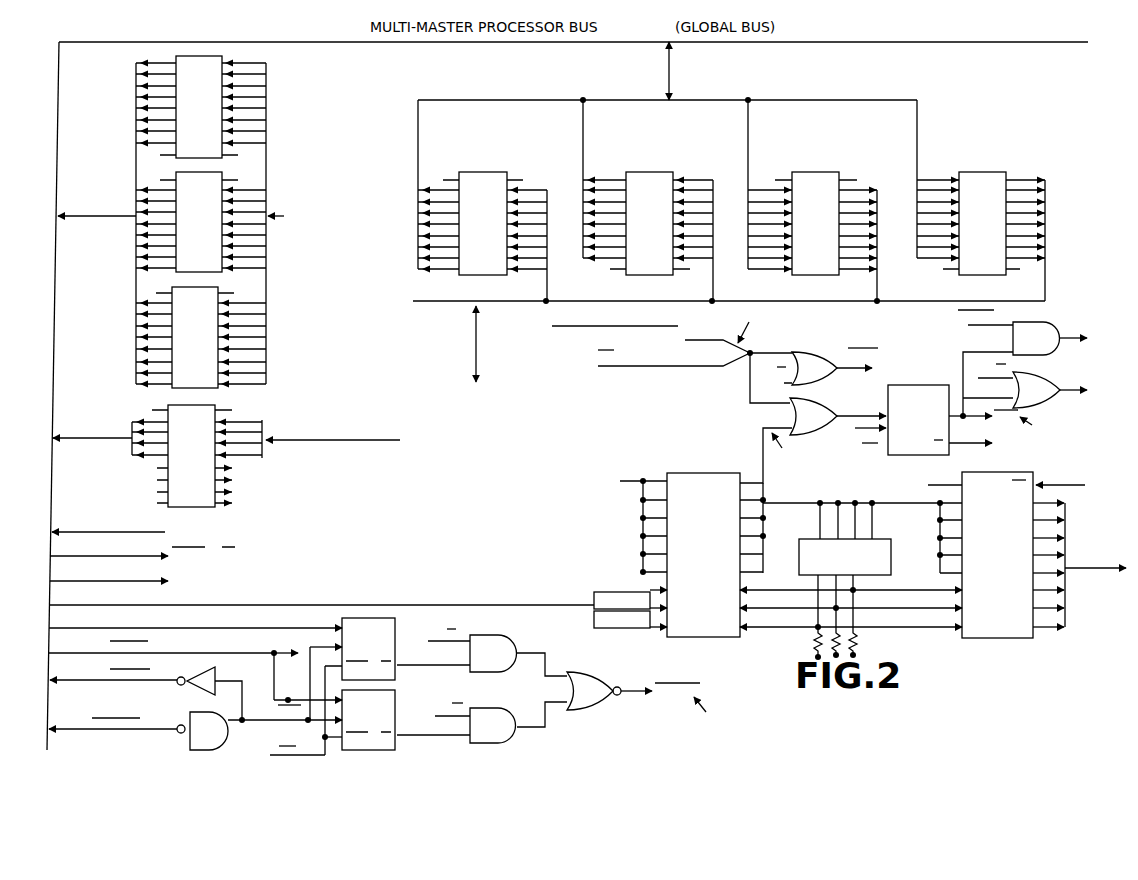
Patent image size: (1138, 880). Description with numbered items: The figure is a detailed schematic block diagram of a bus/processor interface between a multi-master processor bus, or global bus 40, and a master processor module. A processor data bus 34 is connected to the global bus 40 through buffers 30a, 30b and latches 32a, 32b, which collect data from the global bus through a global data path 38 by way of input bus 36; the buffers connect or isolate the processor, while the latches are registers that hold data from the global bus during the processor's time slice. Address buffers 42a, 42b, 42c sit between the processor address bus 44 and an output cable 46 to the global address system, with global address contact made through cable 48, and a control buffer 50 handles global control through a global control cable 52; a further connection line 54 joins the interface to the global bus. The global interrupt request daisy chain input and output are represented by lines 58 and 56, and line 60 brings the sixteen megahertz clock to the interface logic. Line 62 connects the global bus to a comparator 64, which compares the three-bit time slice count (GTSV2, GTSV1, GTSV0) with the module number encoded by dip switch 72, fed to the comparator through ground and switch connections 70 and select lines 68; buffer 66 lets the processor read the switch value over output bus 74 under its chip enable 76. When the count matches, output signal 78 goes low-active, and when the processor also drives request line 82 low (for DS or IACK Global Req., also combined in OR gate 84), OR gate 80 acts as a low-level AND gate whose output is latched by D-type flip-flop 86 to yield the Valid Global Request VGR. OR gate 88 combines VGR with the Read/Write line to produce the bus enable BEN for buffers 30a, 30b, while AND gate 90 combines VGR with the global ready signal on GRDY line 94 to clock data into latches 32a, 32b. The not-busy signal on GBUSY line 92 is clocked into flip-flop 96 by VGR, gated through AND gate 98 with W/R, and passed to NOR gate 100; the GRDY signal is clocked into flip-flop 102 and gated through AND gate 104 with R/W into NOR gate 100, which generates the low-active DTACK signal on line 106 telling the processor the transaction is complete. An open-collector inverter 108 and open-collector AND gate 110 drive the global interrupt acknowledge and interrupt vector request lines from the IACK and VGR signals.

The buffer 30a is at (495, 172).
The buffer 30b is at (655, 172).
The latch 32a is at (825, 172).
The latch 32b is at (988, 172).
The processor data bus 34 is at (590, 301).
The input bus 36 is at (505, 100).
The global data path 38 is at (669, 76).
The global bus 40 is at (529, 42).
The address buffer 42a is at (201, 107).
The address buffer 42b is at (201, 222).
The address buffer 42c is at (201, 337).
The processor address bus 44 is at (266, 288).
The output cable 46 is at (135, 272).
The global address cable 48 is at (125, 212).
The control buffer 50 is at (266, 456).
The global control cable 52 is at (128, 434).
The global bus connection line 54 is at (58, 283).
The global interrupt request output line 56 is at (152, 533).
The global interrupt request input line 58 is at (148, 557).
The clock line 60 is at (148, 582).
The time slice vector line 62 is at (452, 605).
The comparator 64 is at (705, 637).
The buffer 66 is at (975, 640).
The address select lines 68 is at (916, 628).
The ground line 70 is at (875, 503).
The dip switch 72 is at (891, 568).
The processor data bus output 74 is at (1067, 505).
The chip enable line 76 is at (1046, 485).
The comparator output signal 78 is at (759, 480).
The OR gate 80 is at (798, 437).
The access request line 82 is at (690, 340).
The OR gate 84 is at (800, 350).
The D-type flip-flop 86 is at (888, 388).
The OR gate 88 is at (1038, 405).
The AND gate 90 is at (1048, 355).
The GBUSY line 92 is at (245, 628).
The GRDY line 94 is at (215, 653).
The D-type flip-flop 96 is at (398, 632).
The AND gate 98 is at (500, 635).
The NOR gate 100 is at (592, 660).
The D-type flip-flop 102 is at (398, 704).
The AND gate 104 is at (492, 712).
The DTACK line 106 is at (620, 695).
The inverter 108 is at (208, 671).
The AND gate 110 is at (190, 718).